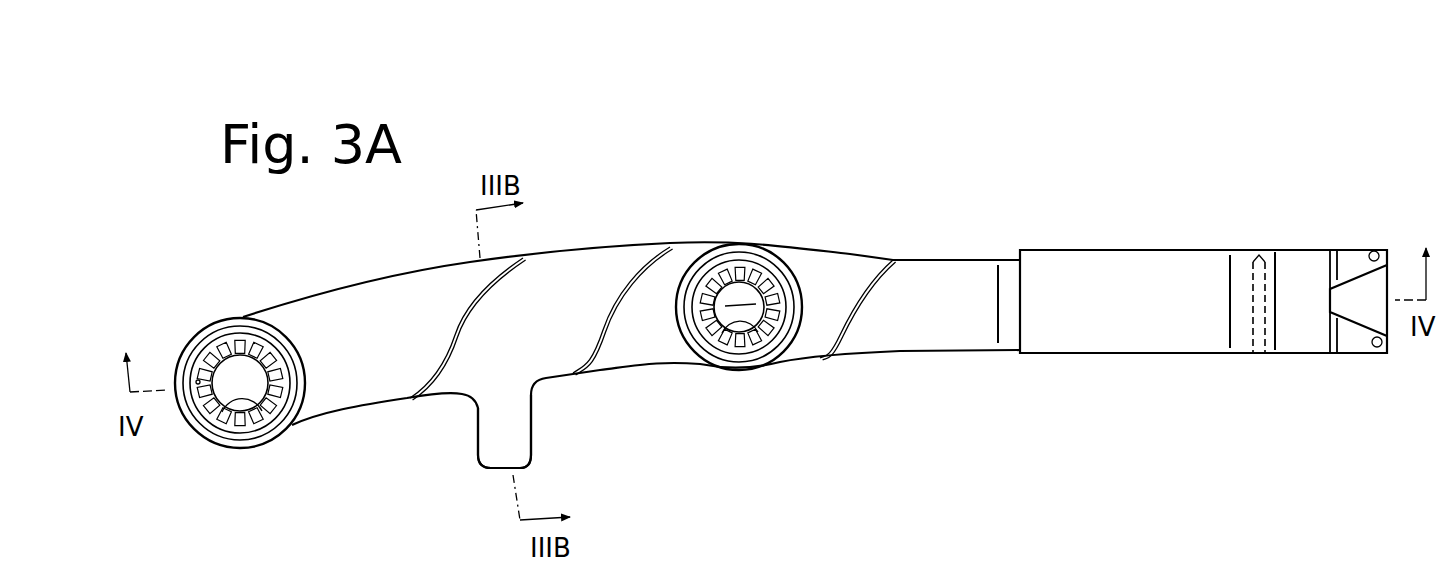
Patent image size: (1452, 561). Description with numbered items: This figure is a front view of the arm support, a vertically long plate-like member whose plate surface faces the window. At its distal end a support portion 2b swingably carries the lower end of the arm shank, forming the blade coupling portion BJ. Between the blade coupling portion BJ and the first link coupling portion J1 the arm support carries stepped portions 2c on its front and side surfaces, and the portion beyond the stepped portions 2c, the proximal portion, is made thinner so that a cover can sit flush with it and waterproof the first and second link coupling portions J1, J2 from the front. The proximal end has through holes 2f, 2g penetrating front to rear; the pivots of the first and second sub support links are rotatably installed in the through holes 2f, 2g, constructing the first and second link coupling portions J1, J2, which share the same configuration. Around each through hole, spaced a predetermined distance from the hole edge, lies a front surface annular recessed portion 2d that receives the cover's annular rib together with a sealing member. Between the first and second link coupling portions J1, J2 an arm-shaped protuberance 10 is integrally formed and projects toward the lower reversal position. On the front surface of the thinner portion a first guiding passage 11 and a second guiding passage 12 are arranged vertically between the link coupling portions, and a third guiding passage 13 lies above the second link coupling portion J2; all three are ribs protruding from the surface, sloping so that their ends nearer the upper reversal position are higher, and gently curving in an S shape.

The first link coupling portion J1 is at (241, 337).
The second link coupling portion J2 is at (742, 266).
The blade coupling portion BJ is at (1353, 225).
The support portion 2b is at (1352, 258).
The stepped portions 2c is at (1020, 292).
The front surface annular recessed portion 2d is at (262, 430).
The through hole 2f is at (232, 412).
The through hole 2g is at (742, 340).
The arm-shaped protuberance 10 is at (500, 432).
The first guiding passage 11 is at (462, 307).
The second guiding passage 12 is at (633, 282).
The third guiding passage 13 is at (868, 285).